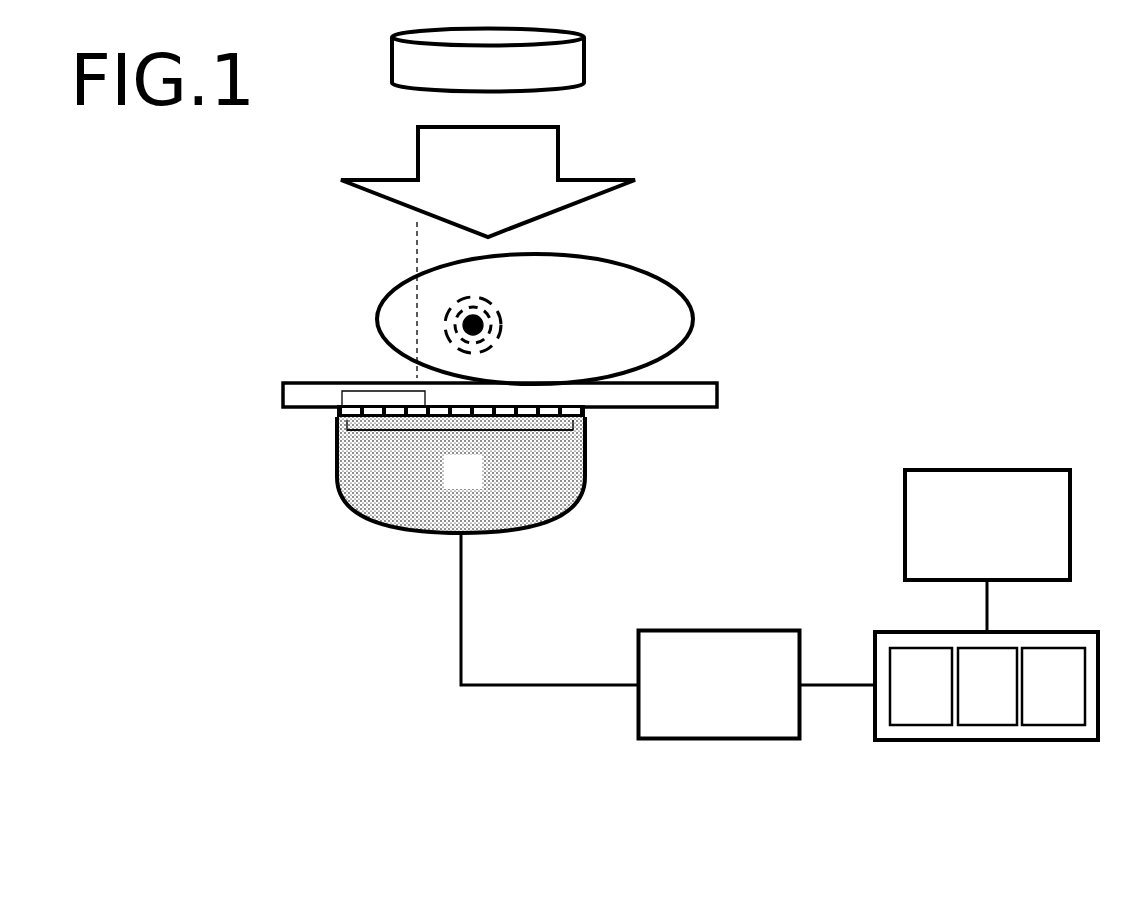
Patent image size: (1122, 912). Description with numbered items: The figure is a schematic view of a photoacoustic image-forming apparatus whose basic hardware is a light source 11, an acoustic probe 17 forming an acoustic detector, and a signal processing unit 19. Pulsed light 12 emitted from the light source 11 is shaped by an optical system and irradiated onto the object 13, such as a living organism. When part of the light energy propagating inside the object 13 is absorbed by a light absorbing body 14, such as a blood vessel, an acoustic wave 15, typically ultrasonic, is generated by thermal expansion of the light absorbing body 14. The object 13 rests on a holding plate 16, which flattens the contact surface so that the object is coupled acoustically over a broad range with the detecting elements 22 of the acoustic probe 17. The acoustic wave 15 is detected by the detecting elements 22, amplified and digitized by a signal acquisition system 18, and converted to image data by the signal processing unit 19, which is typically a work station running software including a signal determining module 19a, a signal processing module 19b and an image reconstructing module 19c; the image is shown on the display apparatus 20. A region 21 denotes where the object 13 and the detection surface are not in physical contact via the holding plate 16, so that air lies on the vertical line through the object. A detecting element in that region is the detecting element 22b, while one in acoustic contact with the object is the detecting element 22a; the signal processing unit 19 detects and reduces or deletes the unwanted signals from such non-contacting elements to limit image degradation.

The light source 11 is at (563, 72).
The pulsed light 12 is at (532, 157).
The object 13 is at (638, 298).
The light absorbing body 14 is at (453, 325).
The acoustic wave 15 is at (507, 295).
The holding plate 16 is at (692, 393).
The acoustic probe 17 is at (553, 450).
The signal acquisition system 18 is at (722, 728).
The signal processing unit 19 is at (986, 736).
The signal determining module 19a is at (921, 686).
The signal processing module 19b is at (987, 686).
The image reconstructing module 19c is at (1053, 686).
The display apparatus 20 is at (978, 493).
The region not in acoustic contact with the object 21 is at (383, 382).
The detecting elements 22 is at (460, 430).
The detecting element in acoustic contact with the object 22a is at (586, 417).
The detecting element not in acoustic contact with the object 22b is at (343, 410).